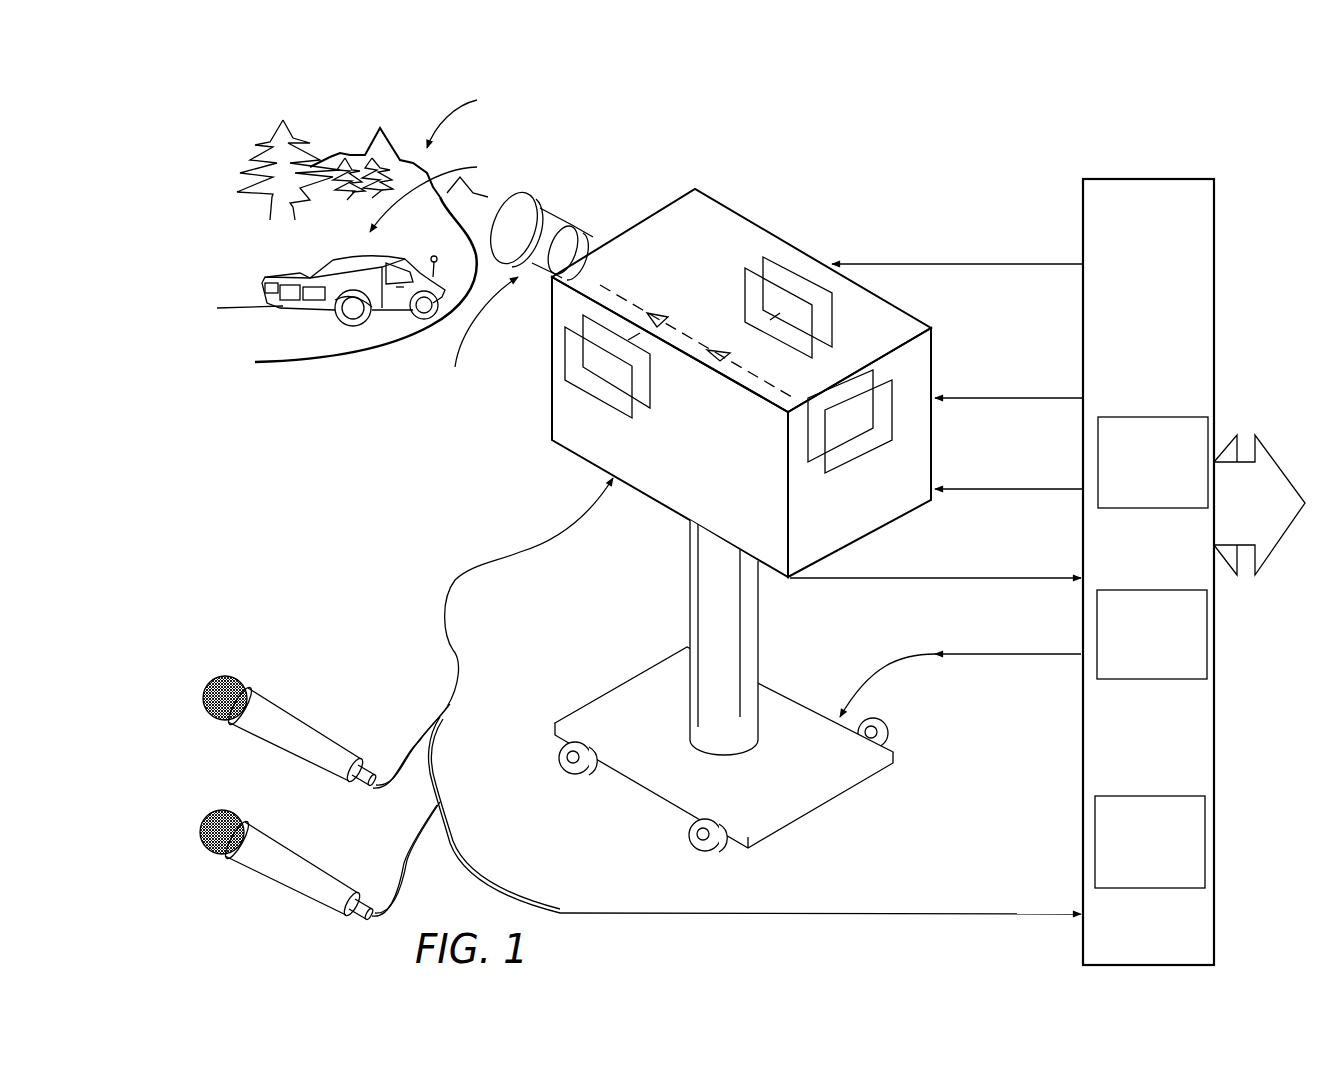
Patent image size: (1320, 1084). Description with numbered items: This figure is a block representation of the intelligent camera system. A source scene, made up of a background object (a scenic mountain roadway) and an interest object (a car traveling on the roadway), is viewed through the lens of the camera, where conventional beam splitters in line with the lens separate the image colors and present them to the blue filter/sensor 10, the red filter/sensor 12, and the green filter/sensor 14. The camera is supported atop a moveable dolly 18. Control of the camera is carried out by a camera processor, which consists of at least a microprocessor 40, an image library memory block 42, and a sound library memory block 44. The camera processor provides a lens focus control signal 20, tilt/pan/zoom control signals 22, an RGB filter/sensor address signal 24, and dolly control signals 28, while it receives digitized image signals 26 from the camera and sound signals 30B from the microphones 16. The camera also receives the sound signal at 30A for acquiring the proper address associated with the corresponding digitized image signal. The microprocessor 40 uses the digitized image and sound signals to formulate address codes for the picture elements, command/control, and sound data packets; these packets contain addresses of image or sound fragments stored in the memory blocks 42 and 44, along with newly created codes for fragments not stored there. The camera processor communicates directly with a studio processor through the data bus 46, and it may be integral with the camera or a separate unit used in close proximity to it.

The blue filter/sensor 10 is at (655, 380).
The red filter/sensor 12 is at (778, 268).
The green filter/sensor 14 is at (883, 428).
The microphones 16 is at (353, 893).
The moveable dolly 18 is at (768, 803).
The lens focus control signal 20 is at (1040, 264).
The tilt/pan/zoom control signals 22 is at (945, 400).
The RGB filter/sensor address signal 24 is at (938, 499).
The digitized image signals 26 is at (850, 580).
The dolly control signals 28 is at (880, 673).
The sound signal 30A is at (503, 560).
The sound signals 30B is at (987, 910).
The microprocessor 40 is at (1148, 418).
The image library memory block 42 is at (1138, 590).
The sound library memory block 44 is at (1115, 796).
The data bus 46 is at (1247, 462).